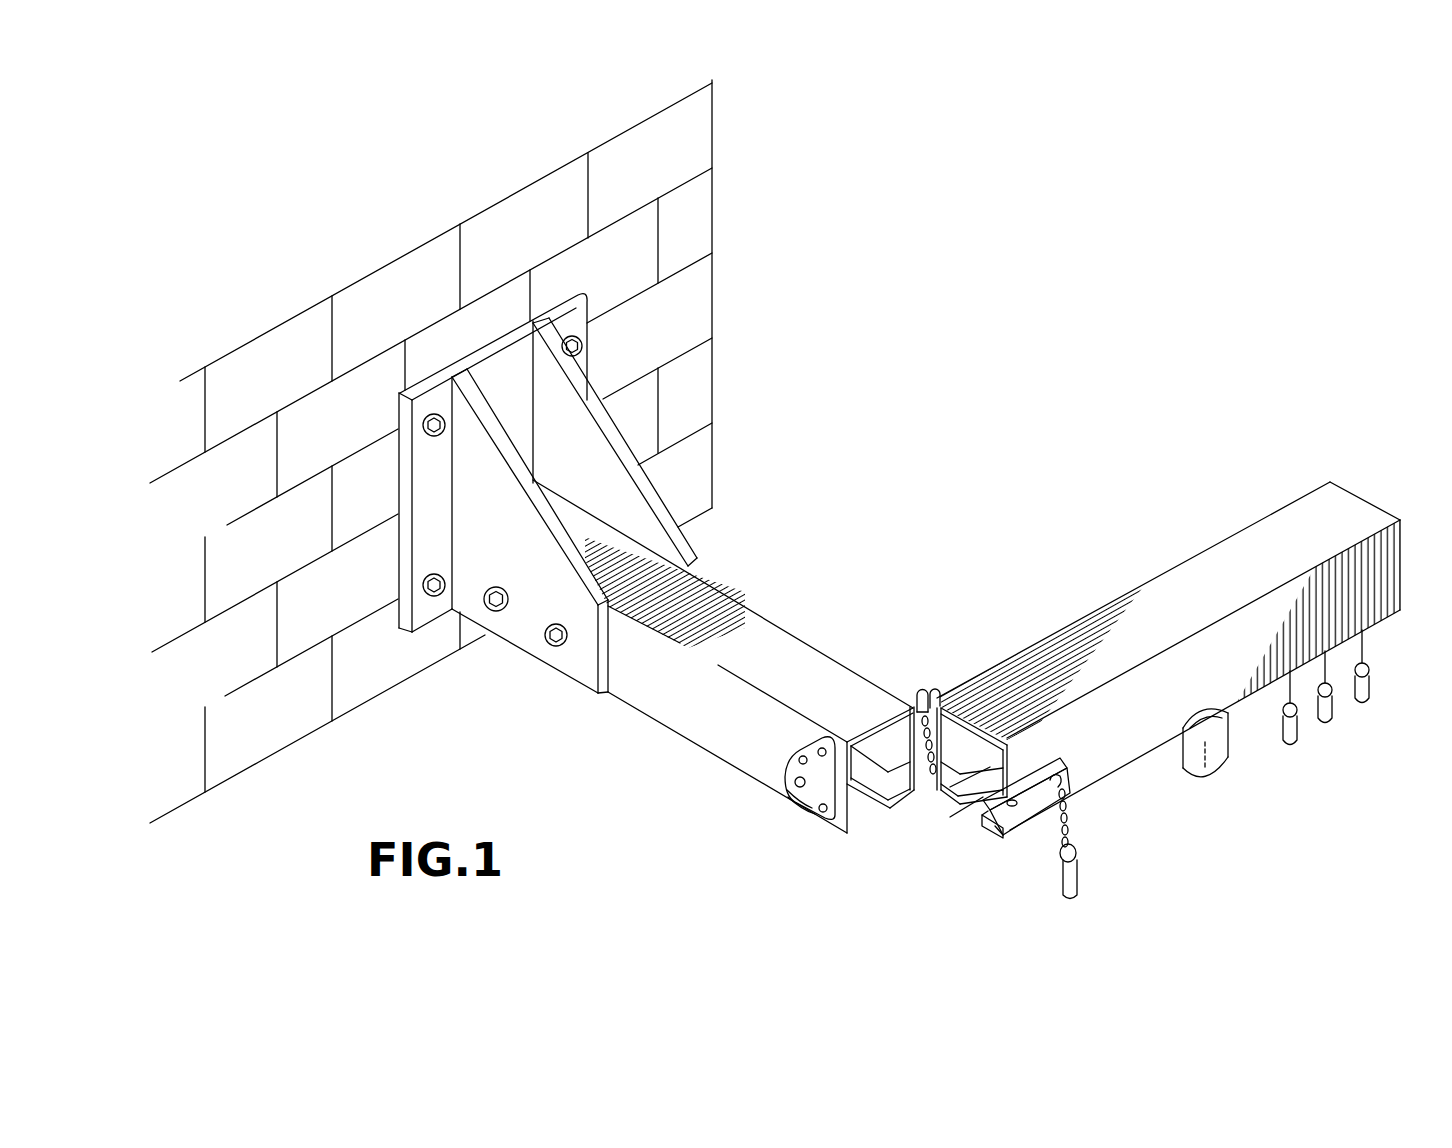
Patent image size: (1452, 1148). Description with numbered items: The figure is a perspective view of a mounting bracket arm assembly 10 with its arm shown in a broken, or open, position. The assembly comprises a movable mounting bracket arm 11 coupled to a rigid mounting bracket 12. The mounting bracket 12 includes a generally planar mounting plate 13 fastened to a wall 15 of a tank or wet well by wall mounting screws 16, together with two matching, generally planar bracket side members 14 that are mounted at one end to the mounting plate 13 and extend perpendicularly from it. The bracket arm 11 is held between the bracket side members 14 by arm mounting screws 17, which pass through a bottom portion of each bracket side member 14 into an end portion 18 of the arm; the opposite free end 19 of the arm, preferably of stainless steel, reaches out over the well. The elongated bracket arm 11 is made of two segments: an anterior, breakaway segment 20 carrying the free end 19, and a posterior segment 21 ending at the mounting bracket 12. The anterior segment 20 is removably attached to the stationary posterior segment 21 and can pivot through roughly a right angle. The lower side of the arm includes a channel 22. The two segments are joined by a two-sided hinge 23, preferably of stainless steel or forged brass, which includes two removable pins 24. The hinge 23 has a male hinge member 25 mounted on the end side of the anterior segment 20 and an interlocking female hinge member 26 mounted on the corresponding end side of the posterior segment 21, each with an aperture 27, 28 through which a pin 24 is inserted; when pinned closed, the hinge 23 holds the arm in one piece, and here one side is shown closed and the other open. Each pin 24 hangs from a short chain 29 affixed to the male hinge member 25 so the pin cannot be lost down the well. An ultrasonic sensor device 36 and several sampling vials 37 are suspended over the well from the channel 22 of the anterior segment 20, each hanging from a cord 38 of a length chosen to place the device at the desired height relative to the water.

The mounting bracket arm assembly 10 is at (884, 573).
The mounting bracket arm 11 is at (982, 675).
The mounting bracket 12 is at (517, 460).
The mounting plate 13 is at (588, 353).
The bracket side members 14 is at (560, 414).
The wall 15 is at (406, 320).
The wall mounting screws 16 is at (572, 336).
The arm mounting screws 17 is at (491, 611).
The end portion 18 is at (665, 548).
The free end 19 is at (1329, 481).
The anterior breakaway segment 20 is at (1168, 626).
The posterior segment 21 is at (798, 683).
The channel 22 is at (870, 808).
The hinge 23 is at (927, 681).
The removable pins 24 is at (1079, 882).
The male hinge member 25 is at (1032, 792).
The female hinge member 26 is at (800, 767).
The aperture 27 is at (996, 829).
The aperture 28 is at (800, 787).
The chain 29 is at (1068, 811).
The ultrasonic sensor device 36 is at (1210, 773).
The sampling vials 37 is at (1357, 702).
The cord 38 is at (1364, 640).